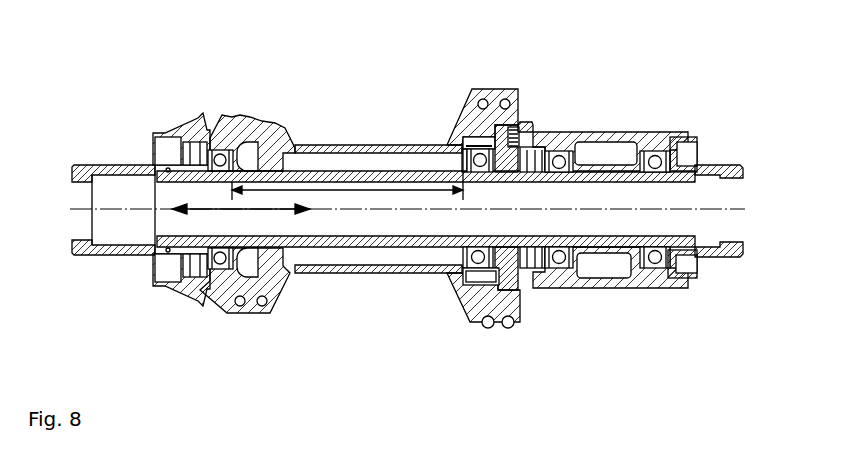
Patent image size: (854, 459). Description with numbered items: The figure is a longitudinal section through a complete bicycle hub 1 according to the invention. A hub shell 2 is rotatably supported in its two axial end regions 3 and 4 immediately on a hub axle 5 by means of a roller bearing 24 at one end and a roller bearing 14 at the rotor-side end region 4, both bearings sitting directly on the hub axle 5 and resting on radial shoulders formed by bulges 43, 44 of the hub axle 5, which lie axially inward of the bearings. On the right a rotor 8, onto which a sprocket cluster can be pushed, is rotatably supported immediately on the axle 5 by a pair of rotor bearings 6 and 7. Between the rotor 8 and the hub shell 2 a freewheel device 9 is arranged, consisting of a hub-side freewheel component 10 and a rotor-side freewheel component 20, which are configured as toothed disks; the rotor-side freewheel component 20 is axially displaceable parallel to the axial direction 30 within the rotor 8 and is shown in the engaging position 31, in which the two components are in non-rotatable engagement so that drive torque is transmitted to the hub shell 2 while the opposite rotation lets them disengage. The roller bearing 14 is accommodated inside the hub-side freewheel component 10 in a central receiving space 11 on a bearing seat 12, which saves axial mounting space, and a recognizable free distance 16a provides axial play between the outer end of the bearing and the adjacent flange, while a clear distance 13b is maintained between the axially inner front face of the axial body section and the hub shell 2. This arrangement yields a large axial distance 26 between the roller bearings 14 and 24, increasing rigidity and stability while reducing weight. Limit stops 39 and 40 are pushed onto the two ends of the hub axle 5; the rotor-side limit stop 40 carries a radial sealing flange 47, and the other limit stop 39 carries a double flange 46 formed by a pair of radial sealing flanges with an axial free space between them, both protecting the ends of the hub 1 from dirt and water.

The hub 1 is at (116, 63).
The hub shell 2 is at (361, 143).
The axial end region 3 is at (216, 99).
The rotor-side end region 4 is at (483, 84).
The hub axle 5 is at (353, 241).
The rotor bearing 6 is at (561, 177).
The rotor bearing 7 is at (655, 177).
The rotor 8 is at (661, 130).
The freewheel device 9 is at (537, 115).
The hub-side freewheel component 10 is at (468, 276).
The central receiving space 11 is at (460, 158).
The bearing seat 12 is at (480, 141).
The clear distance 13b is at (462, 133).
The roller bearing 14 is at (488, 181).
The free distance 16a is at (500, 146).
The rotor-side freewheel component 20 is at (524, 270).
The roller bearing 24 is at (217, 180).
The axial distance 26 is at (352, 192).
The axial direction 30 is at (232, 212).
The engaging position 31 is at (523, 318).
The limit stop 39 is at (103, 164).
The rotor-side limit stop 40 is at (733, 163).
The bulge 43 is at (246, 250).
The bulge 44 is at (455, 252).
The double flange 46 is at (165, 153).
The radial sealing flange 47 is at (688, 151).